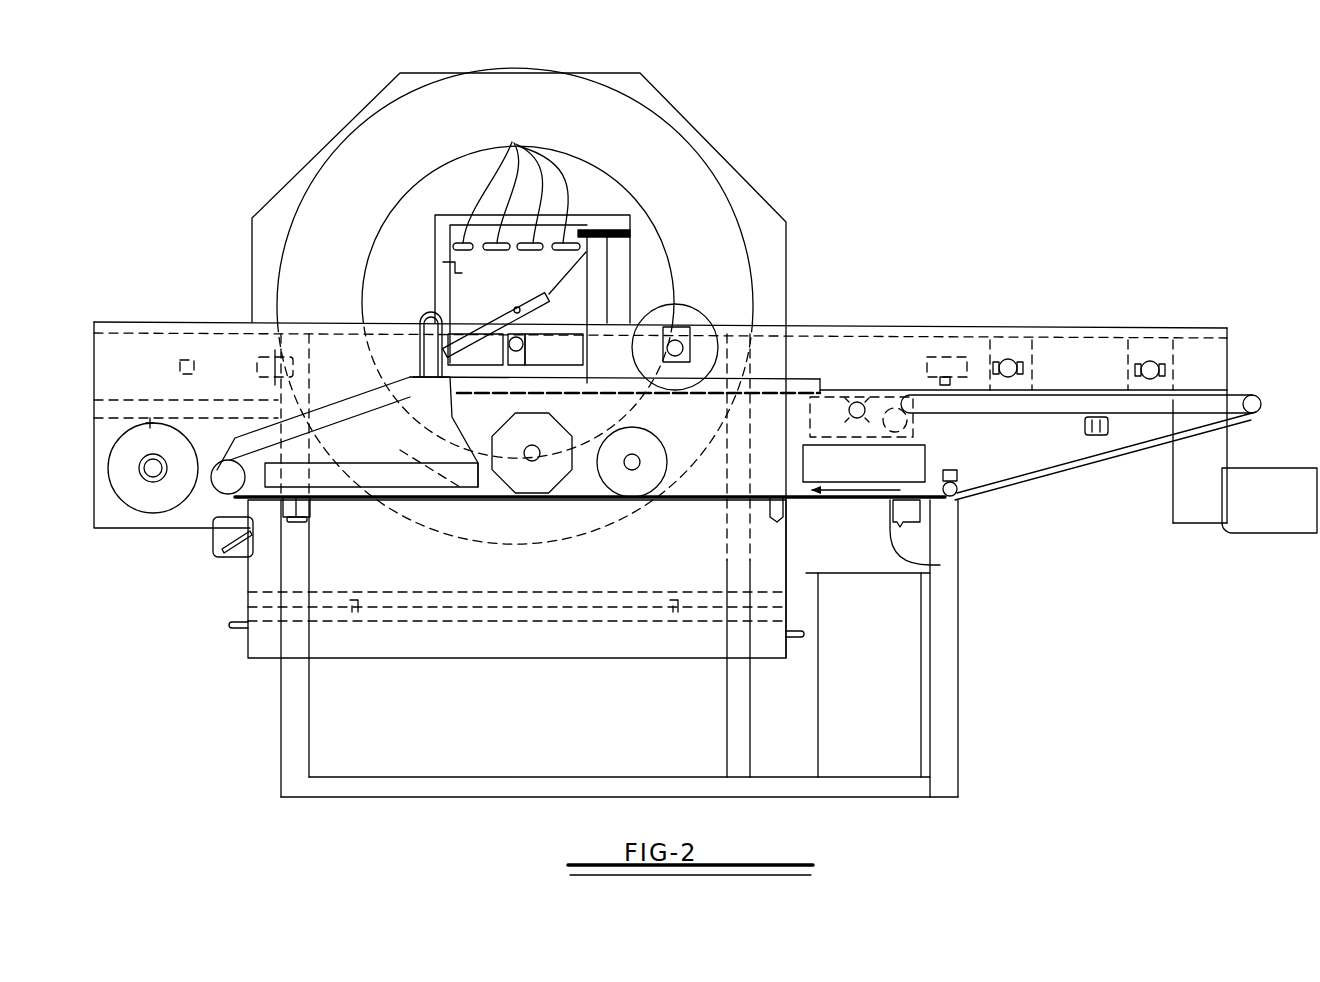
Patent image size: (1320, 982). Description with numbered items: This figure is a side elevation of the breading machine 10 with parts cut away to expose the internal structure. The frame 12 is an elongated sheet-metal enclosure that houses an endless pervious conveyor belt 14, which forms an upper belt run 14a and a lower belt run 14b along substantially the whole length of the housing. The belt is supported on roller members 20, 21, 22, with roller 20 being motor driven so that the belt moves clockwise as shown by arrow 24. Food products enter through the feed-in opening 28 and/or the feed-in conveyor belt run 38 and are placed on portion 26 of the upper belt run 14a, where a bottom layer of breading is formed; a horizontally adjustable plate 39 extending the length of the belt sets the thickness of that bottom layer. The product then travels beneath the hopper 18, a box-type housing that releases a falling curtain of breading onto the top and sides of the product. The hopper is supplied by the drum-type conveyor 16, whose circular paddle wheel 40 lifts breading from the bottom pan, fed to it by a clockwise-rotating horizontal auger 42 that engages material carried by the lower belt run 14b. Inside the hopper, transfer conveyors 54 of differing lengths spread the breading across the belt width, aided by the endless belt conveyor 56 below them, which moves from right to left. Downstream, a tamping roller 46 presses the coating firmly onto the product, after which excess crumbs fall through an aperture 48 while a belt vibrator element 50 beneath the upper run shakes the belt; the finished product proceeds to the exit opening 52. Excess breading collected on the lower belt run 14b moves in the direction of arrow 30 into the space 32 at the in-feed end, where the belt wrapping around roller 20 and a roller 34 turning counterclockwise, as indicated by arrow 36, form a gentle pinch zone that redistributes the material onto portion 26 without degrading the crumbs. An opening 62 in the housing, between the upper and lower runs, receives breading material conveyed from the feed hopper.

The breading machine 10 is at (958, 208).
The frame 12 is at (1105, 327).
The conveyor belt 14 is at (1105, 455).
The upper belt run 14a is at (370, 400).
The lower belt run 14b is at (485, 500).
The drum-type conveyor 16 is at (716, 96).
The hopper 18 is at (420, 257).
The roller 20 is at (245, 477).
The roller member 21 is at (1257, 398).
The roller member 22 is at (957, 490).
The arrow 24 is at (400, 400).
The feed-in portion of upper belt run 26 is at (393, 392).
The feed-in opening 28 is at (120, 378).
The arrow 30 is at (940, 565).
The space 32 is at (207, 492).
The roller 34 is at (133, 487).
The arrow 36 is at (183, 482).
The feed-in conveyor belt run 38 is at (190, 400).
The plate 39 is at (265, 386).
The circular paddle wheel 40 is at (725, 207).
The auger 42 is at (535, 473).
The tamping roller 46 is at (702, 324).
The aperture 48 is at (870, 388).
The belt vibrator element 50 is at (865, 410).
The exit opening 52 is at (1232, 378).
The transfer conveyors 54 is at (516, 191).
The endless belt conveyor 56 is at (515, 300).
The opening 62 is at (958, 490).